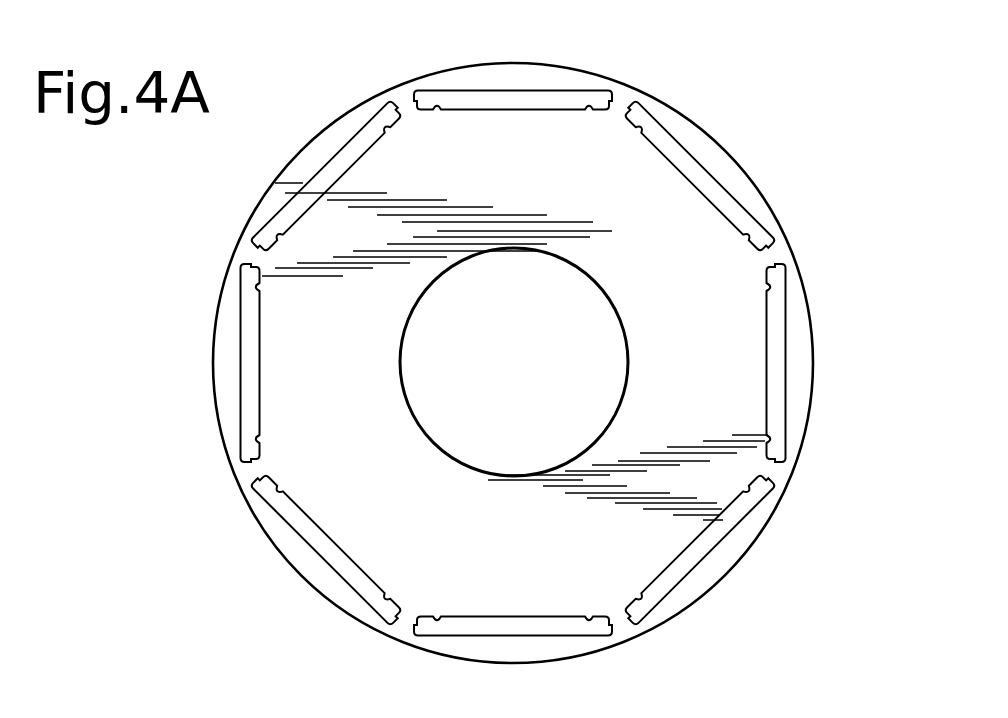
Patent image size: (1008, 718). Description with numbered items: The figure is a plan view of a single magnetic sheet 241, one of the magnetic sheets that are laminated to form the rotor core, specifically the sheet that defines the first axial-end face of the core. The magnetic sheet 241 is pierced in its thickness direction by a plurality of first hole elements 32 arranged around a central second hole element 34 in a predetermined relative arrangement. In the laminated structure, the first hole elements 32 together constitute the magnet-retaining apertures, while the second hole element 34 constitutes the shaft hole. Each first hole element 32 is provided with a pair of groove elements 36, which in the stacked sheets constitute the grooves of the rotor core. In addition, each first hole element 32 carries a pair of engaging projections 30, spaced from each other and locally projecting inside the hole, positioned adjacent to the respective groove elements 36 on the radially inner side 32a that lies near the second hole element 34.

The magnetic sheet 241 is at (338, 111).
The first hole element 32 is at (677, 153).
The radially inner side 32a is at (710, 207).
The engaging projection 30 is at (747, 230).
The second hole element 34 is at (592, 282).
The groove element 36 is at (773, 497).